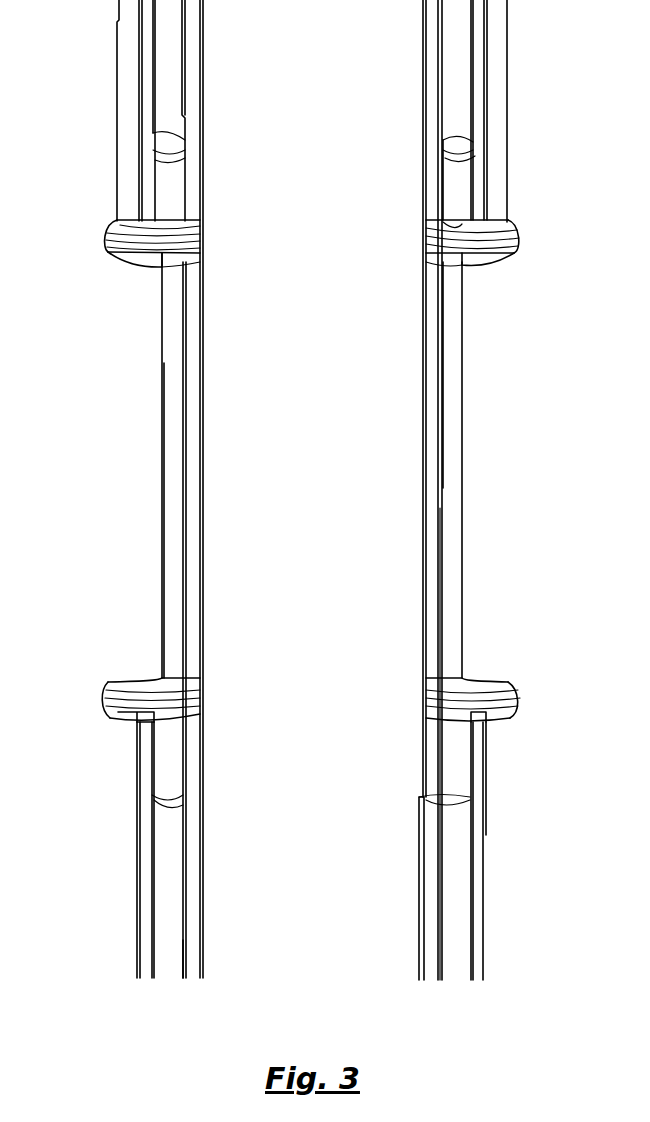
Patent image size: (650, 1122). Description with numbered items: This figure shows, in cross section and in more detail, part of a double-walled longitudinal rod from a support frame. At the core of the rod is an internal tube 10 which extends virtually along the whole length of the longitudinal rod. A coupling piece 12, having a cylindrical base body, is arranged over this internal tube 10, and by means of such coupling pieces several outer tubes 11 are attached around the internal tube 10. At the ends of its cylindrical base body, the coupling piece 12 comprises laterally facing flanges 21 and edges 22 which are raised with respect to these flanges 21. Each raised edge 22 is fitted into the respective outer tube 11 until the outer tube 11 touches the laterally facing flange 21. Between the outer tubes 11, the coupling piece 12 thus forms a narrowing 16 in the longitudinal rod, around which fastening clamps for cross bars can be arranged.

The internal tube 10 is at (435, 563).
The outer tube 11 is at (480, 97).
The coupling piece 12 is at (457, 380).
The narrowing 16 is at (129, 504).
The laterally facing flange 21 is at (517, 245).
The raised edge 22 is at (462, 183).